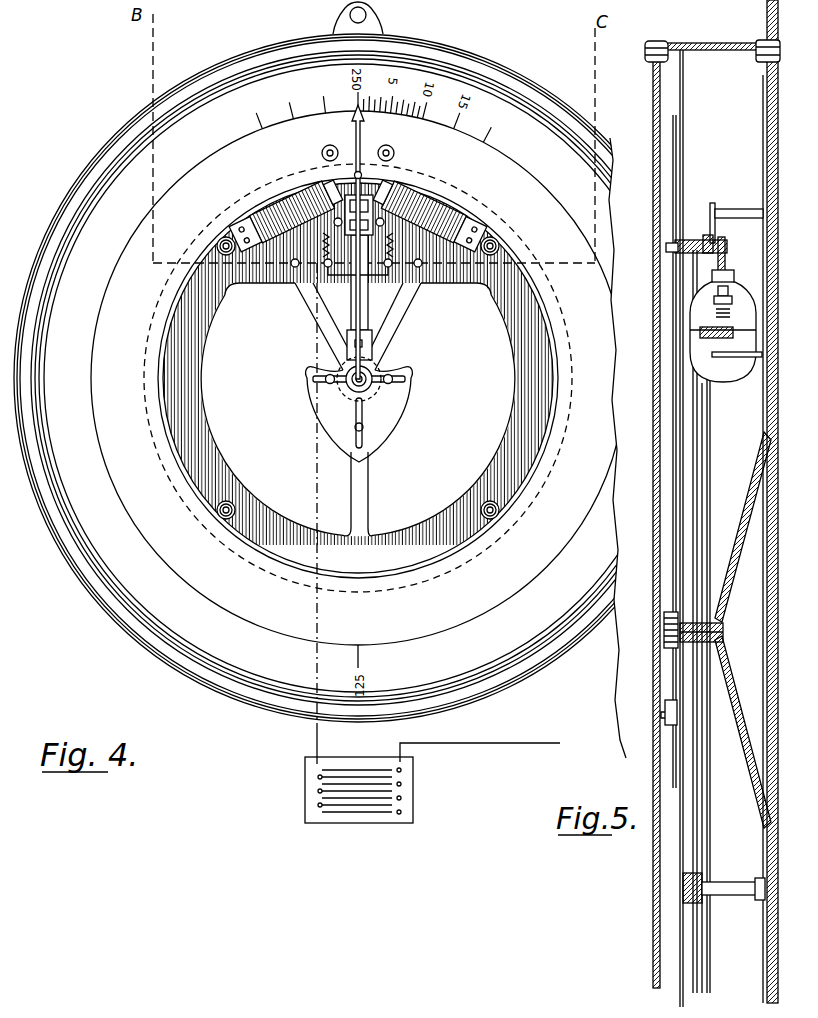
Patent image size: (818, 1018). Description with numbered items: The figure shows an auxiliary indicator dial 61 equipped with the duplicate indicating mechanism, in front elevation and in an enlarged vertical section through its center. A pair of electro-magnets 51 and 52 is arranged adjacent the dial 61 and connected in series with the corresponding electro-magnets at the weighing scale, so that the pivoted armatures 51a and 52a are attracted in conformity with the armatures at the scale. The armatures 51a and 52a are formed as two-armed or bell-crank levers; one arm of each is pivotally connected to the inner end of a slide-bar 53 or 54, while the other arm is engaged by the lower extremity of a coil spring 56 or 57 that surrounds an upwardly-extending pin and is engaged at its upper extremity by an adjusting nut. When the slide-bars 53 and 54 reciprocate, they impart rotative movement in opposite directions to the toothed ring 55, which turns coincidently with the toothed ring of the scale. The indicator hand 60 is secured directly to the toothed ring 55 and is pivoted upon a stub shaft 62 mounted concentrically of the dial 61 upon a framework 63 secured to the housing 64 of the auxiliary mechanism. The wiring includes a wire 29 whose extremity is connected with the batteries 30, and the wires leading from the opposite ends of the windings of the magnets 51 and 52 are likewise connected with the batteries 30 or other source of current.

In FIG. 4, the wire 29 is at (538, 743).
In FIG. 4, the battery 30 is at (405, 818).
In FIG. 4, the electro-magnet 51 is at (292, 215).
In FIG. 4, the pivoted armature 51a is at (327, 200).
In FIG. 4, the electro-magnet 52 is at (438, 213).
In FIG. 4, the pivoted armature 52a is at (393, 192).
In FIG. 4, the slide-bar 53 is at (349, 215).
In FIG. 4, the slide-bar 54 is at (382, 211).
In FIG. 4, the toothed ring 55 is at (489, 217).
In FIG. 4, the coil spring 56 is at (377, 277).
In FIG. 4, the coil spring 57 is at (348, 275).
In FIG. 4, the indicator hand 60 is at (364, 122).
In FIG. 4, the auxiliary dial 61 is at (460, 86).
In FIG. 4, the stub shaft 62 is at (378, 370).
In FIG. 5, the stub shaft 62 is at (723, 633).
In FIG. 5, the framework 63 is at (731, 562).
In FIG. 5, the housing 64 is at (706, 44).